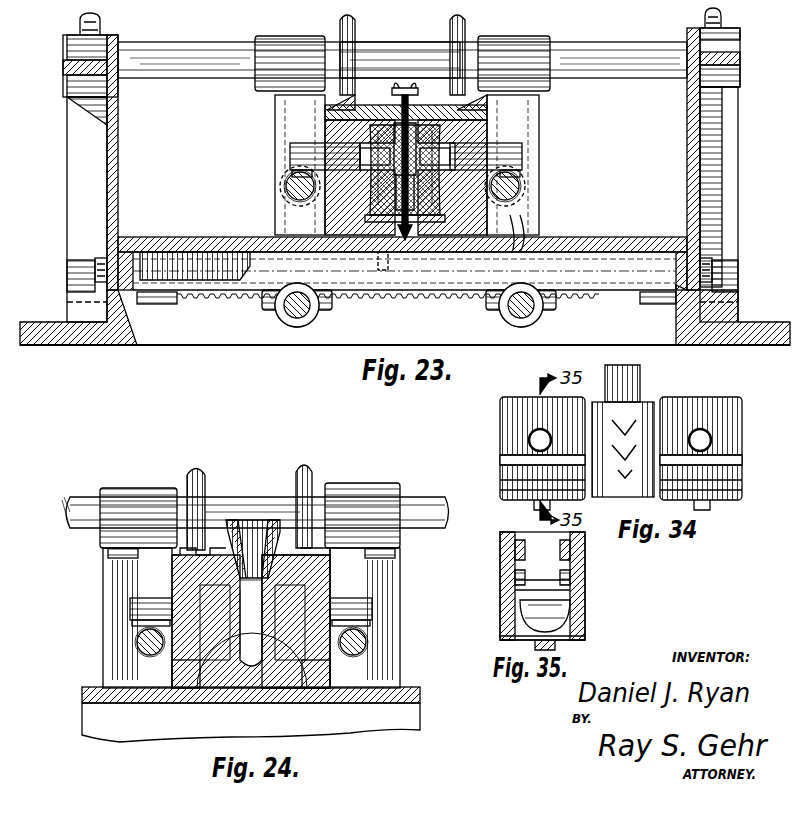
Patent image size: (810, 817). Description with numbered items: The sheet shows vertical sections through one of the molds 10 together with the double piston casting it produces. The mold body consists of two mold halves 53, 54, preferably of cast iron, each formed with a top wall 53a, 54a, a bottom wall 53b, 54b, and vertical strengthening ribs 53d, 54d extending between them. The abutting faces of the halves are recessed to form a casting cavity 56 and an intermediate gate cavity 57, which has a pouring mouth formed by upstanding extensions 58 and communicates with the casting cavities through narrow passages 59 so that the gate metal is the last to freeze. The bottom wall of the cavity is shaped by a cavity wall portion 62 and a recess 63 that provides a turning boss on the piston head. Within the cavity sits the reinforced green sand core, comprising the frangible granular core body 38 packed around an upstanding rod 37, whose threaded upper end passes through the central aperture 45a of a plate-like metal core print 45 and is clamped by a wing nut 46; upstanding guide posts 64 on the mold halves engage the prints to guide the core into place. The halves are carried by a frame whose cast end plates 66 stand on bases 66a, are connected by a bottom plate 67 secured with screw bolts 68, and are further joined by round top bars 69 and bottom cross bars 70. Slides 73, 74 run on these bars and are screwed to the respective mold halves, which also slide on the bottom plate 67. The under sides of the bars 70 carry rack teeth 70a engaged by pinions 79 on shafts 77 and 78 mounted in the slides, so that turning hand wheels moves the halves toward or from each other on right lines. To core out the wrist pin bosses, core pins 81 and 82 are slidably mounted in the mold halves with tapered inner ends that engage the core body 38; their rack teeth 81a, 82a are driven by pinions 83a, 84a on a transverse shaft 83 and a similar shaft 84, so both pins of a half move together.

In FIG. 23, the mold 10 is at (487, 42).
In FIG. 24, the mold 10 is at (326, 485).
In FIG. 23, the upstanding rod 37 is at (513, 165).
In FIG. 23, the frangible granular core body 38 is at (412, 115).
In FIG. 23, the core print 45 is at (420, 100).
In FIG. 23, the central aperture 45a is at (400, 90).
In FIG. 23, the wing nut 46 is at (392, 48).
In FIG. 23, the mold half 53 is at (340, 123).
In FIG. 24, the mold half 53 is at (182, 571).
In FIG. 24, the top wall 53a is at (172, 561).
In FIG. 24, the bottom wall 53b is at (172, 674).
In FIG. 24, the vertical strengthening rib 53d is at (172, 597).
In FIG. 23, the mold half 54 is at (470, 122).
In FIG. 24, the mold half 54 is at (340, 568).
In FIG. 24, the top wall 54a is at (330, 561).
In FIG. 24, the bottom wall 54b is at (330, 668).
In FIG. 24, the vertical strengthening rib 54d is at (335, 589).
In FIG. 23, the casting cavity 56 is at (275, 125).
In FIG. 24, the gate cavity 57 is at (222, 694).
In FIG. 24, the upstanding extension 58 is at (248, 520).
In FIG. 24, the narrow passage 59 is at (270, 680).
In FIG. 23, the actuating rod 62 is at (460, 236).
In FIG. 23, the recess 63 is at (410, 250).
In FIG. 23, the guide post 64 is at (346, 30).
In FIG. 24, the guide post 64 is at (190, 478).
In FIG. 23, the end plate 66 is at (78, 145).
In FIG. 23, the base 66a is at (33, 345).
In FIG. 23, the bottom plate 67 is at (612, 236).
In FIG. 24, the bottom plate 67 is at (372, 703).
In FIG. 23, the screw bolt 68 is at (85, 262).
In FIG. 23, the round top bar 69 is at (168, 78).
In FIG. 24, the round top bar 69 is at (422, 492).
In FIG. 23, the bottom cross bar 70 is at (155, 298).
In FIG. 23, the rack teeth 70a is at (585, 298).
In FIG. 23, the slide 73 is at (270, 36).
In FIG. 24, the slide 73 is at (126, 490).
In FIG. 23, the slide 74 is at (535, 36).
In FIG. 24, the slide 74 is at (378, 485).
In FIG. 23, the shaft 77 is at (276, 312).
In FIG. 23, the shaft 78 is at (498, 315).
In FIG. 23, the pinion 79 is at (312, 318).
In FIG. 23, the core pin 81 is at (345, 150).
In FIG. 24, the core pin 81 is at (140, 611).
In FIG. 23, the rack teeth 81a is at (300, 162).
In FIG. 24, the rack teeth 81a is at (140, 622).
In FIG. 23, the core pin 82 is at (470, 150).
In FIG. 24, the core pin 82 is at (370, 611).
In FIG. 23, the rack teeth 82a is at (520, 162).
In FIG. 24, the rack teeth 82a is at (370, 622).
In FIG. 23, the transverse shaft 83 is at (292, 196).
In FIG. 24, the transverse shaft 83 is at (140, 643).
In FIG. 23, the pinion 83a is at (290, 186).
In FIG. 24, the pinion 83a is at (426, 670).
In FIG. 23, the shaft 84 is at (515, 192).
In FIG. 23, the pinion 84a is at (520, 180).